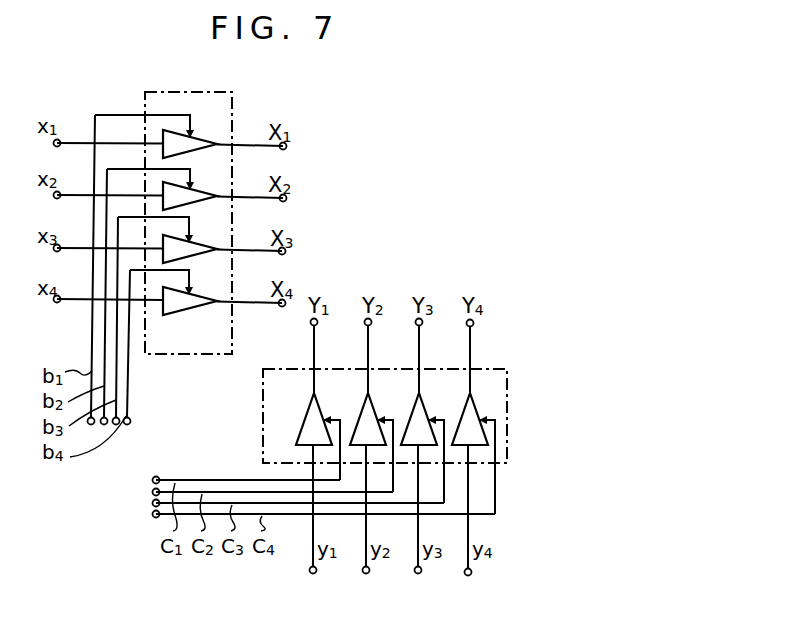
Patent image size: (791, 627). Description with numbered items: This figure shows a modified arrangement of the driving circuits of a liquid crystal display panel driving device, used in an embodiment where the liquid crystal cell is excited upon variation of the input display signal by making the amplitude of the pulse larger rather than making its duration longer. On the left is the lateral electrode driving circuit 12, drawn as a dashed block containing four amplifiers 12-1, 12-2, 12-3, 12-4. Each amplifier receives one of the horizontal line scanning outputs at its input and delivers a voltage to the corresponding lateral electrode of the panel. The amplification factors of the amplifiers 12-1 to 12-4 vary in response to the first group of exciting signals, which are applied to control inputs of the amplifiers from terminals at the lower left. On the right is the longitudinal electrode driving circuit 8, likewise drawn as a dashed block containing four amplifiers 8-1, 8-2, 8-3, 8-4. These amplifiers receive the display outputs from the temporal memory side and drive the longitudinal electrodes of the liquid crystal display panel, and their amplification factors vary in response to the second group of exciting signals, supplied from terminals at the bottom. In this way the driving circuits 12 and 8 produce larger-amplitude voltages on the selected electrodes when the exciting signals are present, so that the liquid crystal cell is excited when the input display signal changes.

The lateral electrode driving circuit 12 is at (236, 107).
The amplifier 12-1 is at (197, 143).
The amplifier 12-2 is at (198, 195).
The amplifier 12-3 is at (198, 247).
The amplifier 12-4 is at (198, 298).
The longitudinal electrode driving circuit 8 is at (506, 419).
The amplifier 8-1 is at (305, 418).
The amplifier 8-2 is at (359, 418).
The amplifier 8-3 is at (410, 418).
The amplifier 8-4 is at (461, 418).